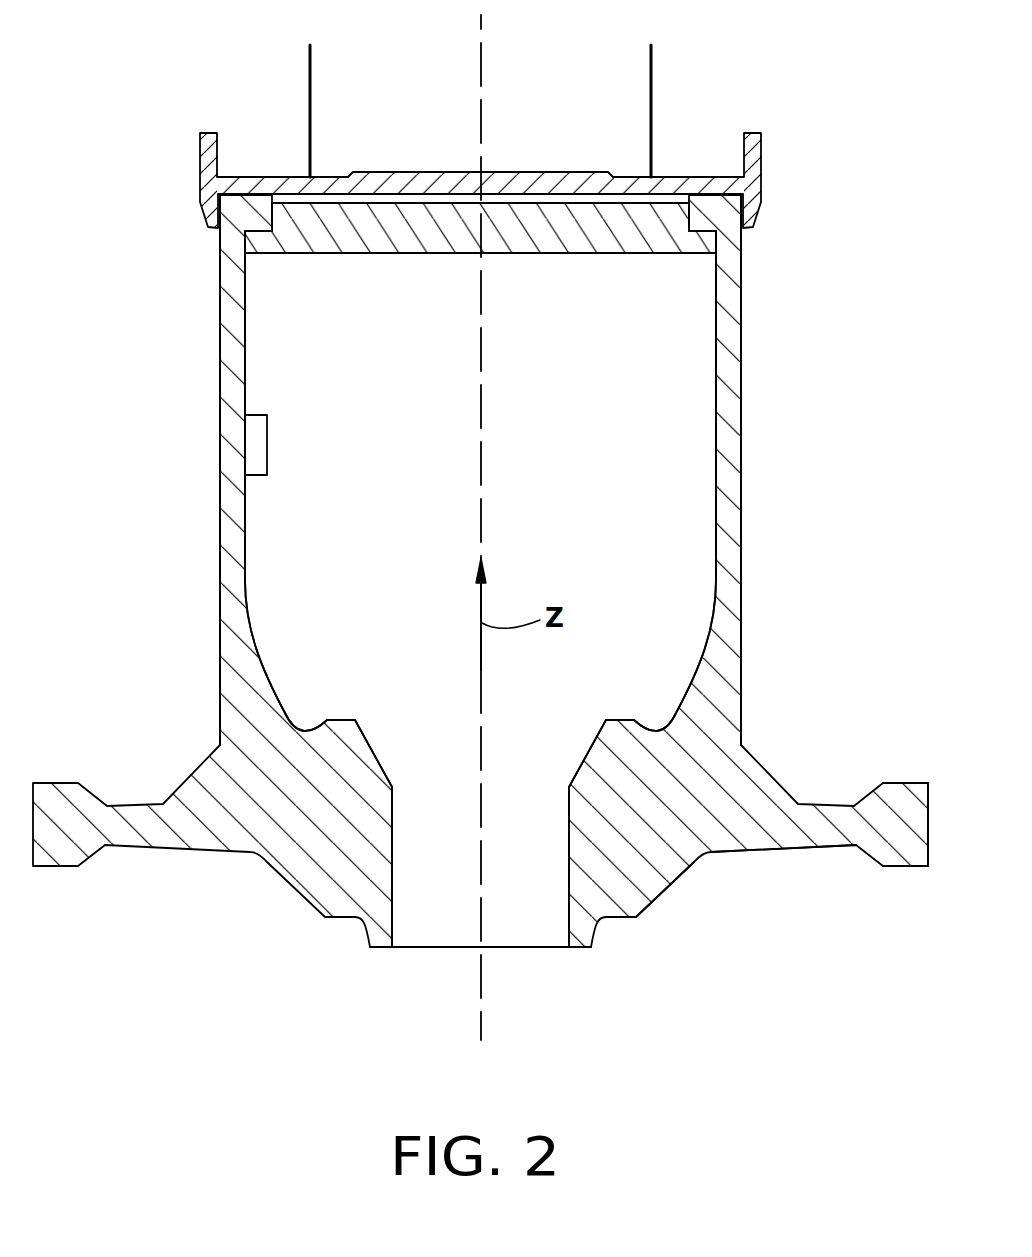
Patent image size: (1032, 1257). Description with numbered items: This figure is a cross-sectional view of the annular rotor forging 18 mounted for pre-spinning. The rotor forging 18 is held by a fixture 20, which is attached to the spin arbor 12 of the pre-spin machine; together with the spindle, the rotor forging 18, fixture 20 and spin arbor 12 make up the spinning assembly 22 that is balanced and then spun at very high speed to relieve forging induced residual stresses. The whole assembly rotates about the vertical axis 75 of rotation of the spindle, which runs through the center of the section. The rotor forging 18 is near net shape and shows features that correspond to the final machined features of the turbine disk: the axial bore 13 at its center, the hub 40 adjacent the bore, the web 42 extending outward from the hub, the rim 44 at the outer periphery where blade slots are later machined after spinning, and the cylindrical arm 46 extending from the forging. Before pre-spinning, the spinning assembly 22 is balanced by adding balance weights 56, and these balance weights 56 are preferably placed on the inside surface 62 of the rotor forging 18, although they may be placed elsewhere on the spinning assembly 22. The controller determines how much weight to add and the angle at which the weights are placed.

The spin arbor 12 is at (651, 110).
The fixture 20 is at (577, 254).
The axis of rotation 75 is at (481, 360).
The rotor forging 18 is at (741, 376).
The axial bore 13 is at (716, 430).
The balance weights 56 is at (267, 442).
The inside surface 62 is at (242, 546).
The cylindrical arm 46 is at (741, 563).
The hub 40 is at (662, 892).
The web 42 is at (837, 850).
The rim 44 is at (900, 867).
The spinning assembly 22 is at (228, 1000).